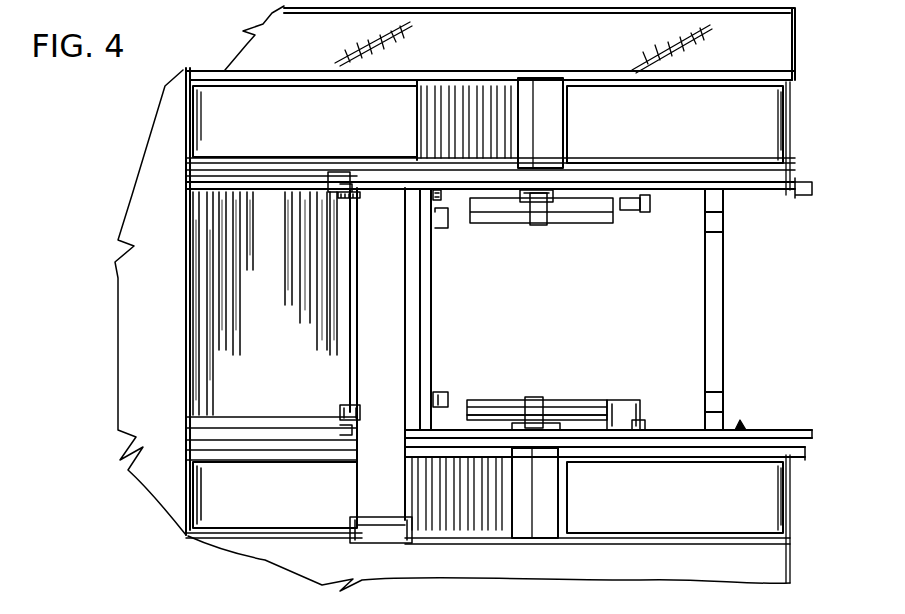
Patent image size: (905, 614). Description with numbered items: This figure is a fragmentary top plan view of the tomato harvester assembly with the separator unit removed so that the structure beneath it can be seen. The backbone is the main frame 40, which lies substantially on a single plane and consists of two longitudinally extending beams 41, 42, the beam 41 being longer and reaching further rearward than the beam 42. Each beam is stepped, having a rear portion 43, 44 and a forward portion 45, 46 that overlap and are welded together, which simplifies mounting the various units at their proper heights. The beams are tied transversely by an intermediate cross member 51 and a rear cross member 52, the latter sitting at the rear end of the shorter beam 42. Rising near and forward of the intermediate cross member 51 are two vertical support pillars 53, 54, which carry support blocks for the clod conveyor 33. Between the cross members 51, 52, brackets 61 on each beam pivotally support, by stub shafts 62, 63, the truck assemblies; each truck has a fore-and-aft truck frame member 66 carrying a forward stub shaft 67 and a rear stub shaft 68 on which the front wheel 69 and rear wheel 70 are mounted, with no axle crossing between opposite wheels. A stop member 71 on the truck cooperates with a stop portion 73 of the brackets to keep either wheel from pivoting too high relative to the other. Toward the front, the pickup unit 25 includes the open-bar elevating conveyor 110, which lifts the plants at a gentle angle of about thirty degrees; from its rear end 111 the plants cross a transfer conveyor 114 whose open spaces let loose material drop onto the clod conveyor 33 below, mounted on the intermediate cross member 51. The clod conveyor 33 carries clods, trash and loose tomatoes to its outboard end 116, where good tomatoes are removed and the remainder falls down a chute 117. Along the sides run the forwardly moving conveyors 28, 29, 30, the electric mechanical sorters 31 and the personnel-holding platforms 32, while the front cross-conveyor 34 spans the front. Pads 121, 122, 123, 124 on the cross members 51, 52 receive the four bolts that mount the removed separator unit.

The pickup unit 25 is at (275, 190).
The forwardly moving conveyor 28 is at (724, 123).
The forwardly moving conveyor 29 is at (460, 100).
The forwardly moving conveyor 30 is at (294, 113).
The electric mechanical sorter 31 is at (547, 88).
The personnel-holding platform 32 is at (503, 43).
The clod conveyor 33 is at (366, 318).
The front cross-conveyor 34 is at (134, 400).
The main frame 40 is at (746, 426).
The longitudinally extending beam 41 is at (590, 442).
The longitudinally extending beam 42 is at (622, 180).
The rear portion 43 is at (802, 446).
The rear portion 44 is at (790, 193).
The forward portion 45 is at (272, 434).
The forward portion 46 is at (222, 180).
The intermediate cross member 51 is at (432, 298).
The rear cross member 52 is at (717, 276).
The vertical support pillar 53 is at (332, 442).
The vertical support pillar 54 is at (340, 176).
The bracket 61 is at (575, 202).
The stub shaft 62 is at (538, 411).
The stub shaft 63 is at (538, 216).
The truck frame member 66 is at (528, 207).
The forward stub shaft 67 is at (495, 413).
The rear stub shaft 68 is at (625, 421).
The front wheel 69 is at (433, 196).
The rear wheel 70 is at (645, 206).
The stop member 71 is at (520, 202).
The stop portion 73 is at (555, 200).
The elevating conveyor 110 is at (205, 316).
The rear end 111 is at (333, 253).
The transfer conveyor 114 is at (316, 288).
The outboard end 116 is at (395, 527).
The chute 117 is at (360, 540).
The pad 121 is at (440, 405).
The pad 122 is at (440, 230).
The pad 123 is at (715, 399).
The pad 124 is at (715, 227).